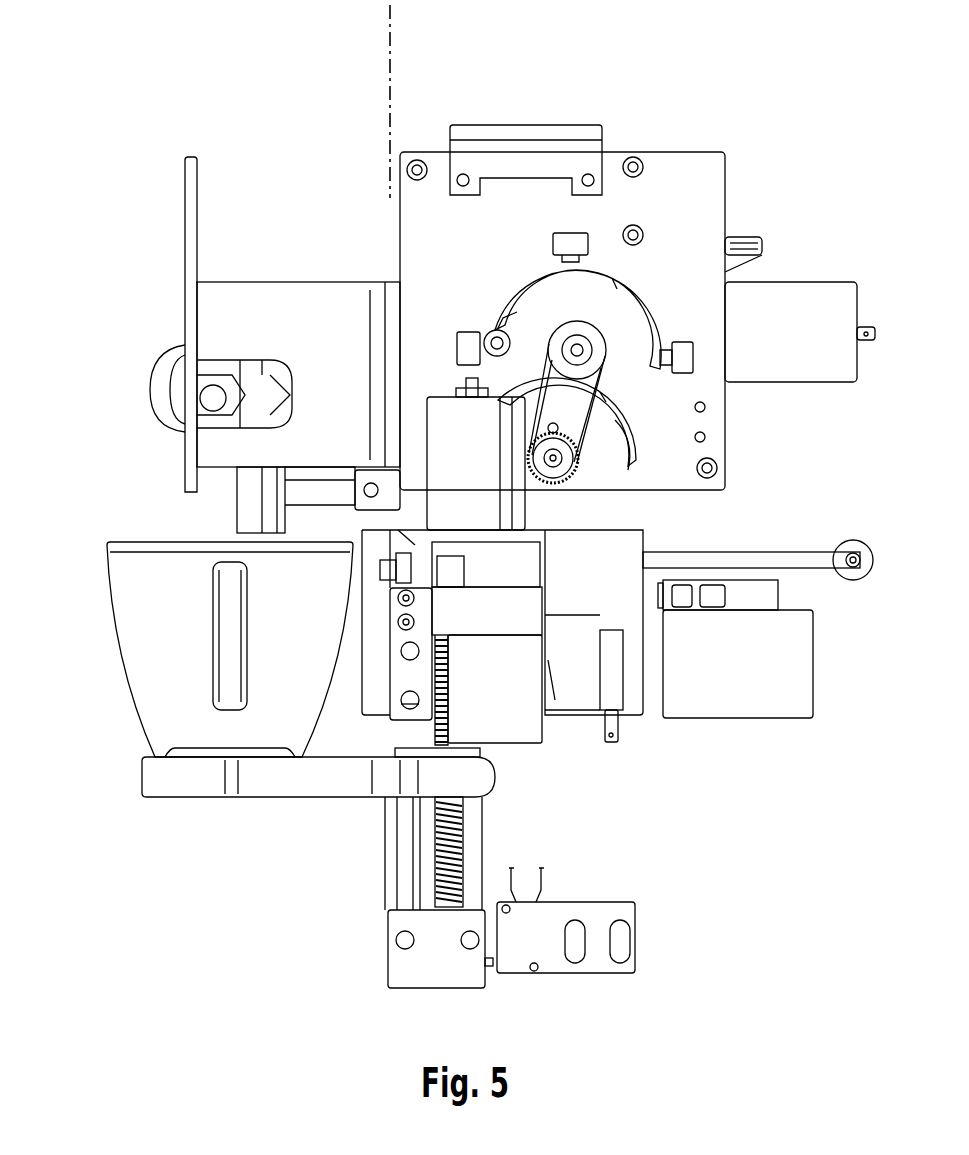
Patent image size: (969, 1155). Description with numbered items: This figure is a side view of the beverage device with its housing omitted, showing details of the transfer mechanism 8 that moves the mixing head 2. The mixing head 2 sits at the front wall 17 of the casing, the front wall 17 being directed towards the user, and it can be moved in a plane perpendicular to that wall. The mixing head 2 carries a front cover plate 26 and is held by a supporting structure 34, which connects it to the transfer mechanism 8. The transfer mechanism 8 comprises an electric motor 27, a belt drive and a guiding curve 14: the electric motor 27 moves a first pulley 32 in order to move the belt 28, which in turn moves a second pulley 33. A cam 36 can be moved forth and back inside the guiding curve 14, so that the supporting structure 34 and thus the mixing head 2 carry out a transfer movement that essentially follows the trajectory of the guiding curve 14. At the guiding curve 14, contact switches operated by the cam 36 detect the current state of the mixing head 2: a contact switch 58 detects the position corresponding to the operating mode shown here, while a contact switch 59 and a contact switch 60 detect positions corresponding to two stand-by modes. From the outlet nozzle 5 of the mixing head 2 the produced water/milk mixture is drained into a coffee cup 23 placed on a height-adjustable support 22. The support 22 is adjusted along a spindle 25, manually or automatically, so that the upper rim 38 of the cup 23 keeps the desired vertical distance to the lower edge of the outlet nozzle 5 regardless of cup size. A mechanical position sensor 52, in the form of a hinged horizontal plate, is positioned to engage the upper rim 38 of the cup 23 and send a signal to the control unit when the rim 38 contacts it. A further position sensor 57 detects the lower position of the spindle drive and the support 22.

The mixing head 2 is at (108, 298).
The outlet nozzle 5 is at (245, 503).
The transfer mechanism 8 is at (690, 137).
The guiding curve 14 is at (640, 292).
The front wall 17 is at (388, 57).
The height-adjustable support 22 is at (142, 779).
The coffee cup 23 is at (112, 638).
The spindle 25 is at (465, 838).
The front cover plate 26 is at (184, 190).
The electric motor 27 is at (513, 496).
The belt 28 is at (615, 387).
The first pulley 32 is at (570, 480).
The second pulley 33 is at (584, 352).
The supporting structure 34 is at (333, 282).
The cam 36 is at (490, 330).
The upper rim 38 is at (128, 543).
The mechanical position sensor 52 is at (300, 495).
The position sensor 57 is at (547, 870).
The contact switch 58 is at (468, 338).
The contact switch 59 is at (552, 244).
The contact switch 60 is at (690, 367).